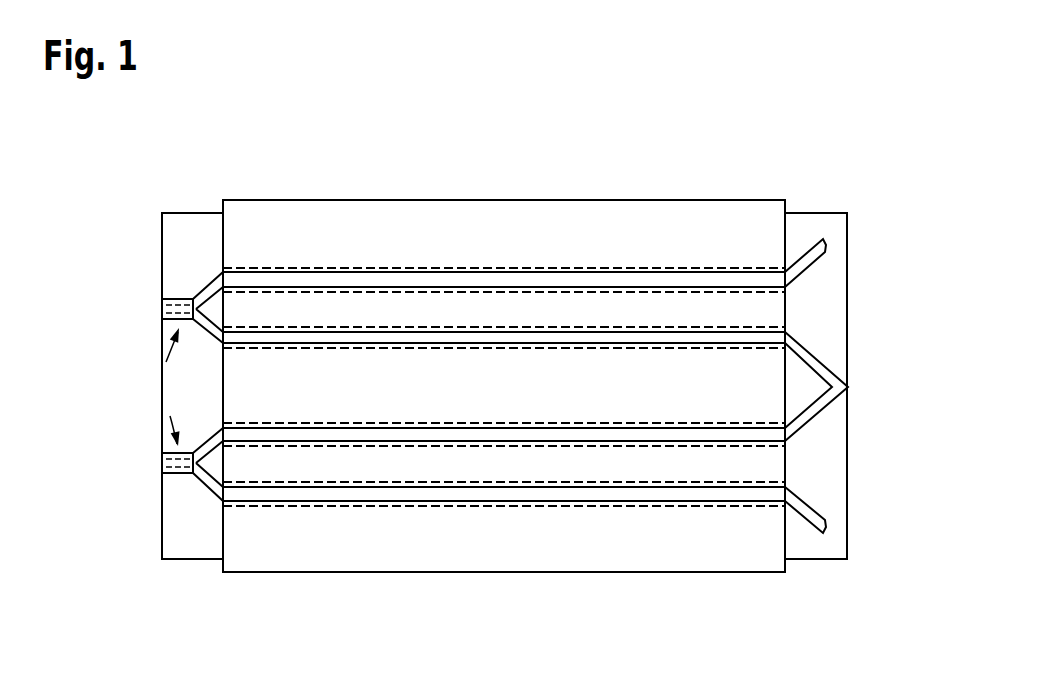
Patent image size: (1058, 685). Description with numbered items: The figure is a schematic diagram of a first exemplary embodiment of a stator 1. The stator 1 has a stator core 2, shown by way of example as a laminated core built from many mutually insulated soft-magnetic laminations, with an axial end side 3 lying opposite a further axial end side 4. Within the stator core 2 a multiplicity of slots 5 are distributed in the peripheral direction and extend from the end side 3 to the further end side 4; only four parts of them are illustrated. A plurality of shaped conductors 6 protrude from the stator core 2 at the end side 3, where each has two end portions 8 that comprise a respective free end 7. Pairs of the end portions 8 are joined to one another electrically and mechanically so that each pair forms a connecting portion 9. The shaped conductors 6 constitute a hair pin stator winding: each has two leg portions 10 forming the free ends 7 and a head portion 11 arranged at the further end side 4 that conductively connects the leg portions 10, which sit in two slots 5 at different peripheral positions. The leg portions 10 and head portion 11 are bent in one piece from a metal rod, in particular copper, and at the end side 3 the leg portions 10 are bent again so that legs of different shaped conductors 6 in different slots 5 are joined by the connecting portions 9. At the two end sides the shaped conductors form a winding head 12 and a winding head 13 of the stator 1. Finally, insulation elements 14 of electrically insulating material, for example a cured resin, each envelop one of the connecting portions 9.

The stator 1 is at (910, 180).
The stator core 2 is at (537, 242).
The axial end side 3 is at (198, 563).
The further axial end side 4 is at (803, 209).
The slots 5 is at (465, 268).
The shaped conductors 6 is at (415, 278).
The free end 7 is at (163, 309).
The end portions 8 is at (178, 299).
The connecting portion 9 is at (166, 362).
The leg portions 10 is at (713, 340).
The head portion 11 is at (815, 364).
The winding head 12 is at (172, 213).
The winding head 13 is at (835, 213).
The insulation elements 14 is at (181, 299).